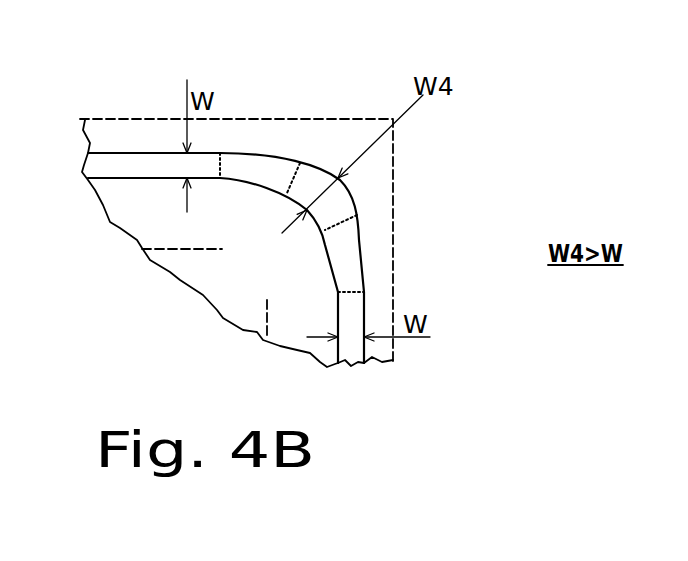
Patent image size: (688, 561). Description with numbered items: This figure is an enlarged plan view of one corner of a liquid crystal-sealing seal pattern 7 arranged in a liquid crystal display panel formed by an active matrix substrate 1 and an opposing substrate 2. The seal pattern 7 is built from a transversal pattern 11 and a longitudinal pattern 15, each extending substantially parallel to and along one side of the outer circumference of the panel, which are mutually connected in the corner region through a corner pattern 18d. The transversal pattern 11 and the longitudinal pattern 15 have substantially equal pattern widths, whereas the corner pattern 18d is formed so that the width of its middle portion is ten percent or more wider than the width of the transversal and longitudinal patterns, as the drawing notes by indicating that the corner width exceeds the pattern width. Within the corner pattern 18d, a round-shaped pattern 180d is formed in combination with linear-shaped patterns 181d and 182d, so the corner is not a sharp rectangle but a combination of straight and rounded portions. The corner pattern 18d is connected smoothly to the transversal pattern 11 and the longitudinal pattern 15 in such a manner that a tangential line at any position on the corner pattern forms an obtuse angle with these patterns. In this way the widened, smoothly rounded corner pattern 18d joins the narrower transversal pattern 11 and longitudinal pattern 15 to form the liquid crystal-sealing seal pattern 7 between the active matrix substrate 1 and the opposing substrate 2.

The active matrix substrate 1 is at (317, 138).
The opposing substrate 2 is at (317, 138).
The liquid crystal-sealing seal pattern 7 is at (111, 147).
The transversal pattern 11 is at (148, 165).
The longitudinal pattern 15 is at (353, 307).
The corner pattern 18d is at (327, 302).
The round-shaped pattern 180d is at (337, 200).
The linear-shaped pattern 181d is at (347, 248).
The linear-shaped pattern 182d is at (264, 168).